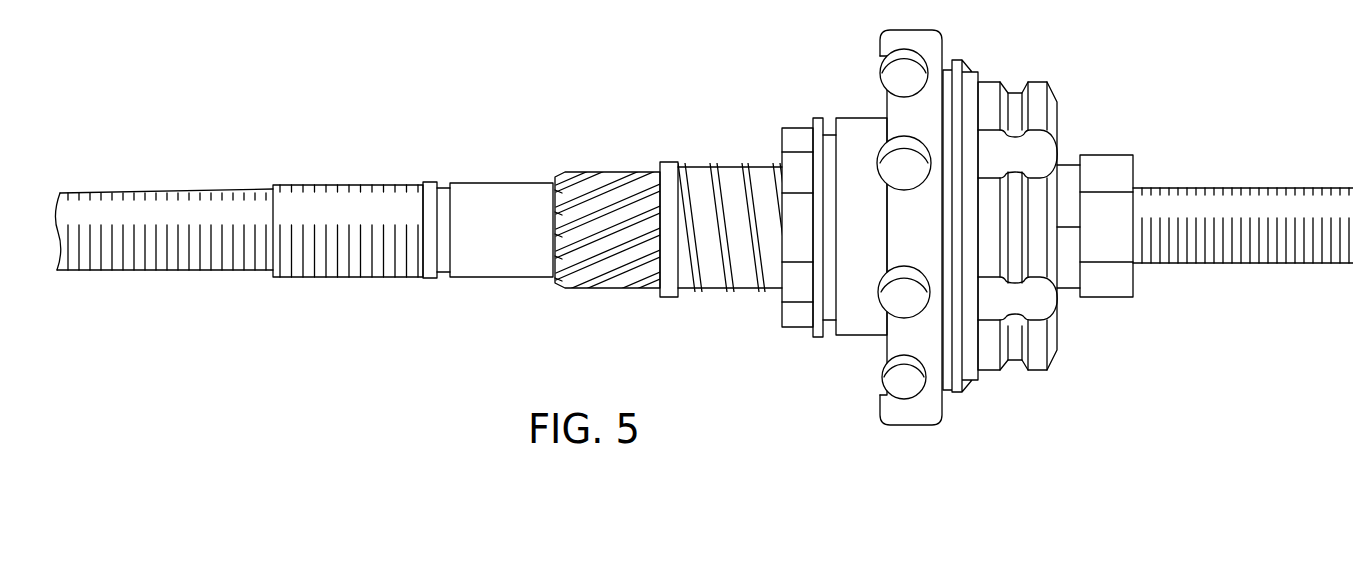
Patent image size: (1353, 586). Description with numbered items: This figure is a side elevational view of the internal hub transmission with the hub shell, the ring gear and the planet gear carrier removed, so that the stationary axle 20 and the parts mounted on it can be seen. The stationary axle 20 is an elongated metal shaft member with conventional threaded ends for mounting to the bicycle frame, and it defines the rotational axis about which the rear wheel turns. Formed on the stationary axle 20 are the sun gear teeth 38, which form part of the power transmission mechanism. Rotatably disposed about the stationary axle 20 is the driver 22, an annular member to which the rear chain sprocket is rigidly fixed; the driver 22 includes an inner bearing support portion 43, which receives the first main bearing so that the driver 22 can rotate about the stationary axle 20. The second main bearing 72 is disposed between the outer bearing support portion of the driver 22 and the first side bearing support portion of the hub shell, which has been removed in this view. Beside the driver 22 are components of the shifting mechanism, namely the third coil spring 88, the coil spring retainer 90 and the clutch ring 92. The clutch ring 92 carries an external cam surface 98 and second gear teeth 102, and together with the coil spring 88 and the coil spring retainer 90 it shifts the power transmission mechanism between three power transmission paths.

The stationary axle 20 is at (1292, 205).
The driver 22 is at (860, 312).
The sun gear teeth 38 is at (600, 205).
The inner bearing support portion 43 is at (1050, 100).
The second main bearing 72 is at (895, 79).
The third coil spring 88 is at (747, 163).
The coil spring retainer 90 is at (670, 173).
The clutch ring 92 is at (830, 145).
The external cam surface 98 is at (820, 127).
The second gear teeth 102 is at (798, 163).